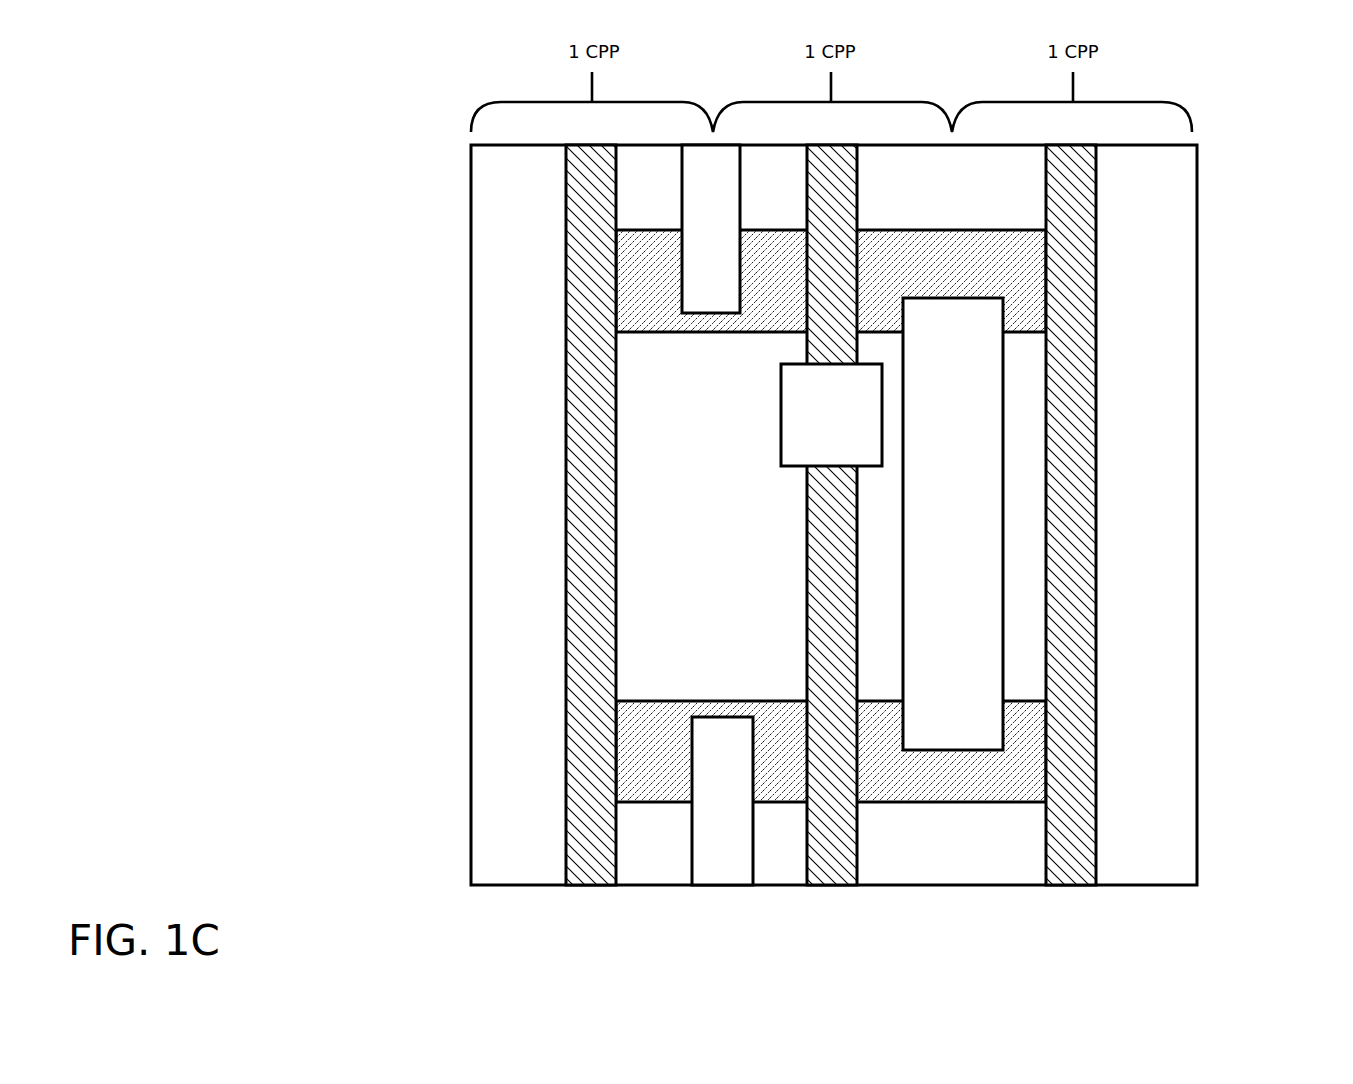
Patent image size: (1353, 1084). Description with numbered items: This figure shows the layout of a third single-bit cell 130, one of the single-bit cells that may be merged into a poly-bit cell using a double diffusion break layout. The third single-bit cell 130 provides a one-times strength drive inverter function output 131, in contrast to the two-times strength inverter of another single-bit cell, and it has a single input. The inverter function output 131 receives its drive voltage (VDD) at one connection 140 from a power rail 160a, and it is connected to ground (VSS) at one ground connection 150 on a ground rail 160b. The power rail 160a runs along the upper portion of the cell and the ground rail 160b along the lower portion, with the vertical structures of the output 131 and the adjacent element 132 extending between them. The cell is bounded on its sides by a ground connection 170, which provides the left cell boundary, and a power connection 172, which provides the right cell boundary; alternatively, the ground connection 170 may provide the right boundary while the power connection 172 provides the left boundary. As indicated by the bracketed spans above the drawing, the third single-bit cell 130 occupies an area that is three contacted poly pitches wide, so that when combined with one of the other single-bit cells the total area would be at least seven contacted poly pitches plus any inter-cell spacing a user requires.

The third single-bit cell 130 is at (1238, 258).
The inverter function output 131 is at (931, 561).
The second active region / contact 132 is at (812, 426).
The connection (VDD) 140 is at (717, 230).
The ground connection (VSS) 150 is at (722, 872).
The power rail 160a is at (987, 230).
The ground rail 160b is at (765, 700).
The ground connection 170 is at (583, 513).
The power connection 172 is at (1097, 480).